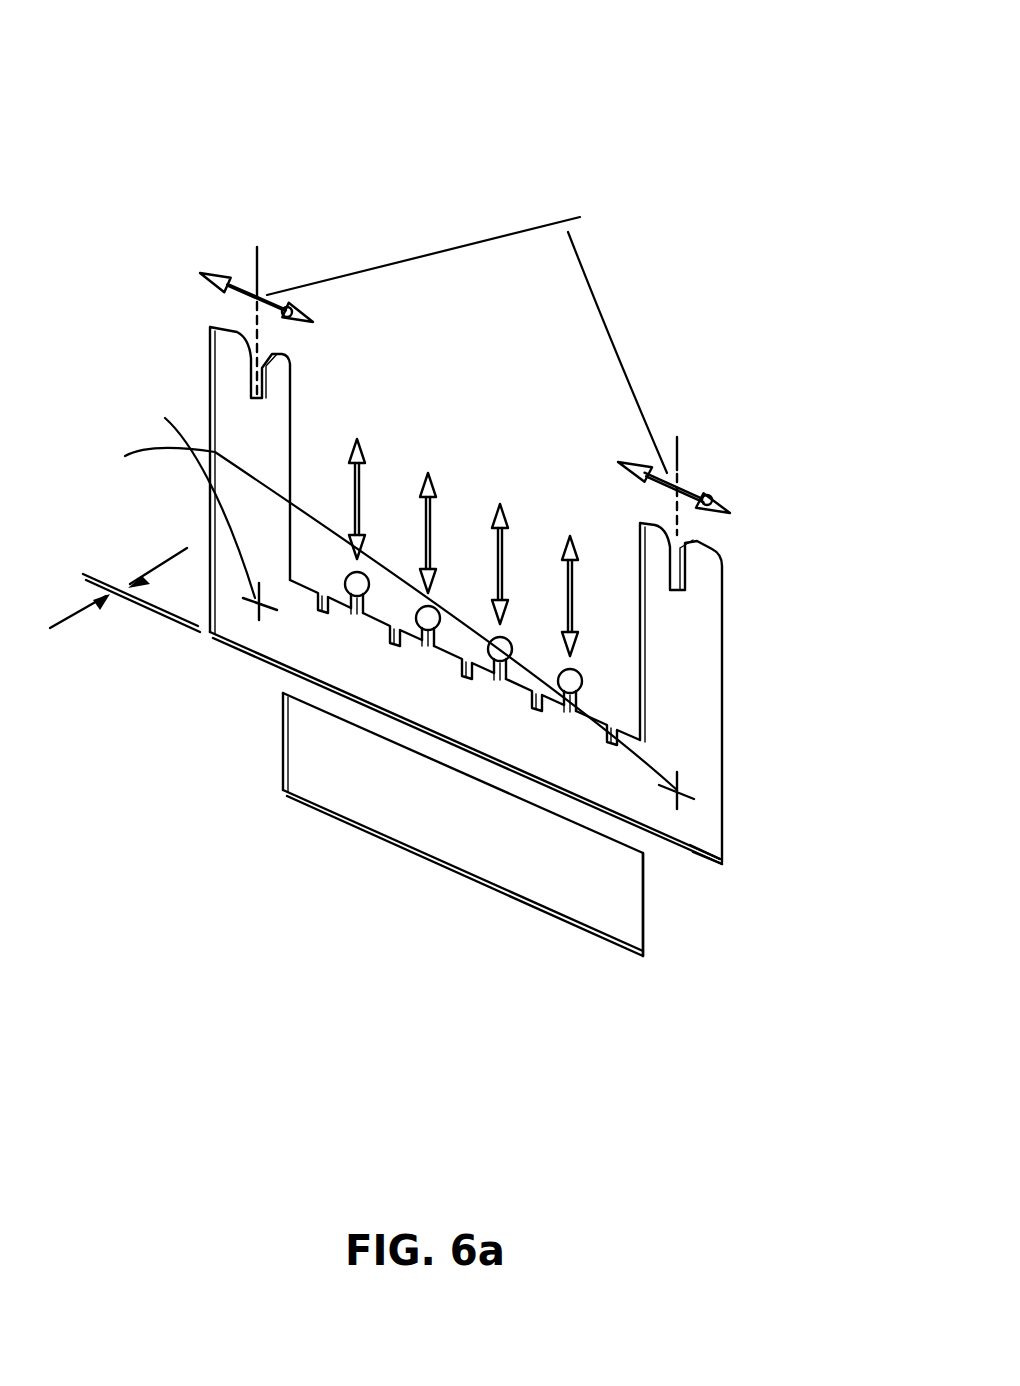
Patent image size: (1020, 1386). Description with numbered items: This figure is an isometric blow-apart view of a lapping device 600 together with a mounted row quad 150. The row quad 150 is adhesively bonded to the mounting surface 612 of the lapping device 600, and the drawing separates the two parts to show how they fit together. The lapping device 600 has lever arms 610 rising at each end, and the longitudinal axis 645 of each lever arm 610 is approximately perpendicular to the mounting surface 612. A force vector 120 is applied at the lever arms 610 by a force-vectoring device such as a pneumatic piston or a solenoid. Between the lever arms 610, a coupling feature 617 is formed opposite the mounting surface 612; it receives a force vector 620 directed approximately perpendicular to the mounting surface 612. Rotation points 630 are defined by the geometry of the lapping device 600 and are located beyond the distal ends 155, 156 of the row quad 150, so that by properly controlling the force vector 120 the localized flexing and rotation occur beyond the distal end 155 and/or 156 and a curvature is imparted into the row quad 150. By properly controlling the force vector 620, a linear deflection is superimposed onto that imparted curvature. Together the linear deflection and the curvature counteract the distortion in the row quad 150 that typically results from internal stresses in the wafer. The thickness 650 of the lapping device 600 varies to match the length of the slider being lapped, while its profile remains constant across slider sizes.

The lapping device 600 is at (277, 152).
The force vector 120 is at (568, 232).
The row quad 150 is at (600, 888).
The distal end 155 is at (280, 767).
The distal end 156 is at (643, 925).
The lever arm 610 is at (230, 420).
The mounting surface 612 is at (700, 853).
The coupling feature 617 is at (357, 618).
The force vector 620 is at (360, 500).
The rotation points 630 is at (165, 418).
The longitudinal axis 645 is at (250, 265).
The thickness 650 is at (150, 568).